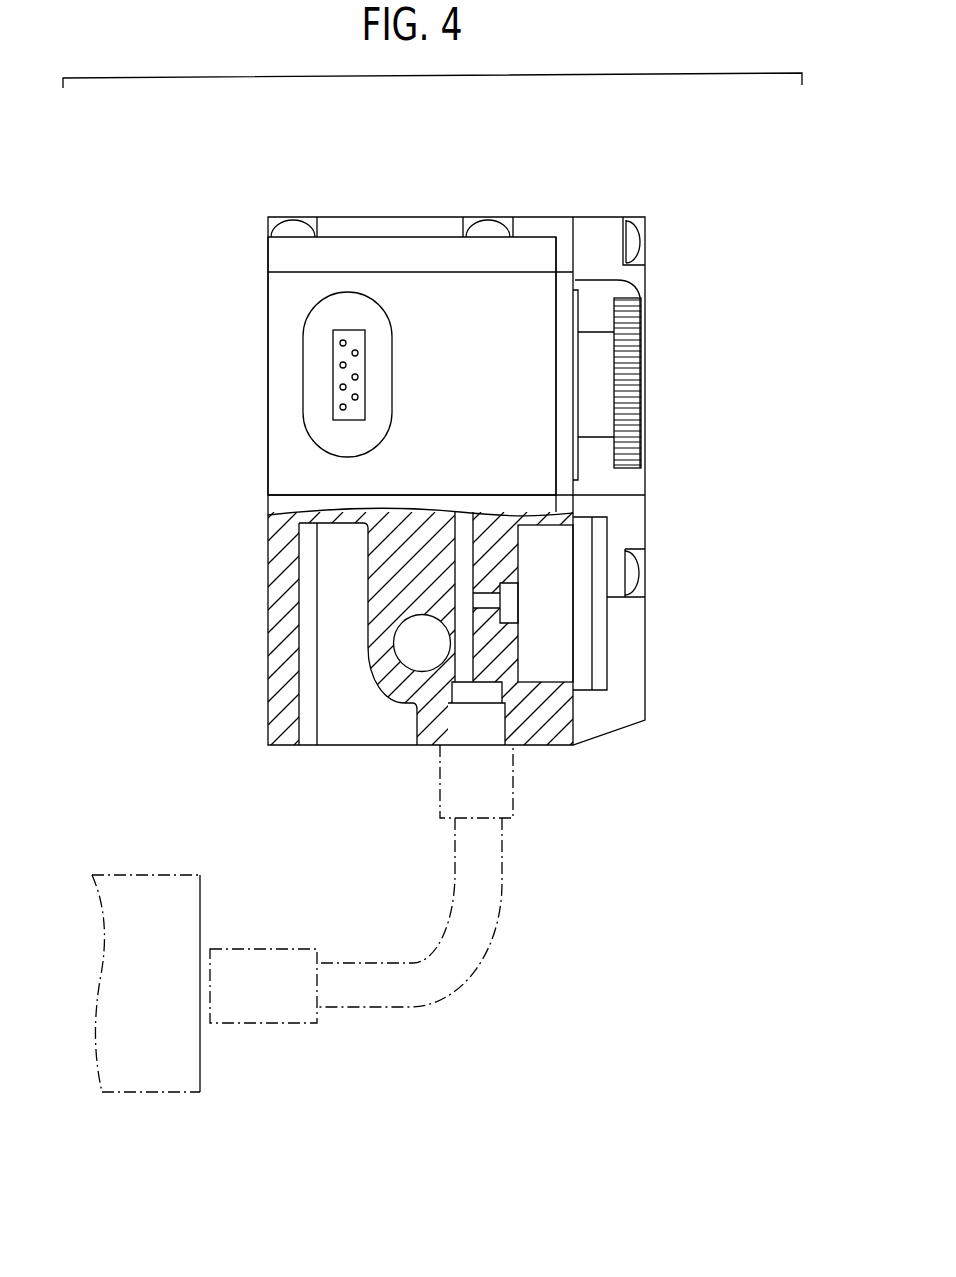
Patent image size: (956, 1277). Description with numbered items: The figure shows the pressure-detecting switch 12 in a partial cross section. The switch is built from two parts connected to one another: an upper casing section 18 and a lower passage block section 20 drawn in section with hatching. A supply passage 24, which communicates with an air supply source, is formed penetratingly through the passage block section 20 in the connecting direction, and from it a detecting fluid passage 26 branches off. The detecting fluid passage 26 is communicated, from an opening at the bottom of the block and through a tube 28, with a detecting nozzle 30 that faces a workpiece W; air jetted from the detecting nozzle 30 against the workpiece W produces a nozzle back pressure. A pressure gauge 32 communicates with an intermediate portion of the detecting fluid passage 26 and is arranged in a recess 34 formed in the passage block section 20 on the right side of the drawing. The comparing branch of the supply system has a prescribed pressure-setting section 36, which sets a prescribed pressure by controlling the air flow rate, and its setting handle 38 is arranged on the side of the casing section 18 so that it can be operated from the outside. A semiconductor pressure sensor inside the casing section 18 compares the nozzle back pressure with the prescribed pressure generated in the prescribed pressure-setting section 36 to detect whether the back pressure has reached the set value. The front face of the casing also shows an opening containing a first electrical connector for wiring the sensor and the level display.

The pressure-detecting switch 12 is at (572, 190).
The casing section 18 is at (398, 232).
The passage block section 20 is at (268, 675).
The supply passage 24 is at (417, 652).
The detecting fluid passage 26 is at (463, 527).
The tube 28 is at (457, 973).
The detecting nozzle 30 is at (273, 980).
The pressure gauge 32 is at (557, 653).
The recess 34 is at (545, 529).
The prescribed pressure-setting section 36 is at (652, 327).
The setting handle 38 is at (630, 390).
The workpiece W is at (183, 1065).